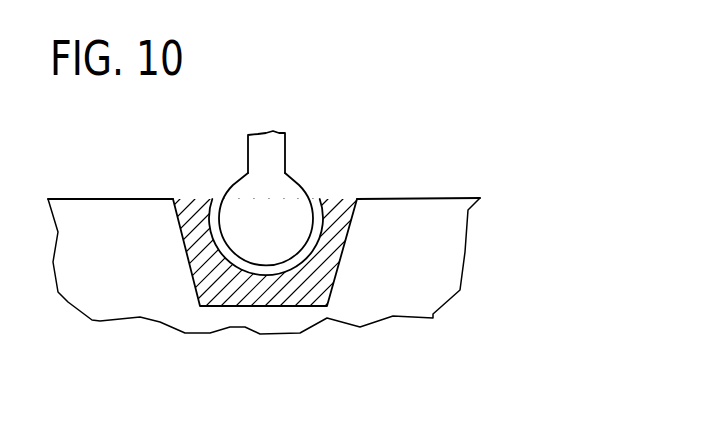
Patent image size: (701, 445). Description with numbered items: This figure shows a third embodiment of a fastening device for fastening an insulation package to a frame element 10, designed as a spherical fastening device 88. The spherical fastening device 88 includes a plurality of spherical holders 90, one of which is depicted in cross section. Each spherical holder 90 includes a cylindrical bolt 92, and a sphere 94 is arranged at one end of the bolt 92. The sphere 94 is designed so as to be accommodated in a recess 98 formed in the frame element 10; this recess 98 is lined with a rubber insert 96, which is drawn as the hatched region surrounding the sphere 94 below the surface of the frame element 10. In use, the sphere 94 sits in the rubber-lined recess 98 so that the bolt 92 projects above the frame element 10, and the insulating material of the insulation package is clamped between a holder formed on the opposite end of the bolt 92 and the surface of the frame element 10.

The frame element 10 is at (447, 245).
The spherical fastening device 88 is at (417, 156).
The spherical holder 90 is at (266, 180).
The cylindrical bolt 92 is at (256, 147).
The sphere 94 is at (248, 202).
The rubber insert 96 is at (323, 272).
The recess 98 is at (343, 217).